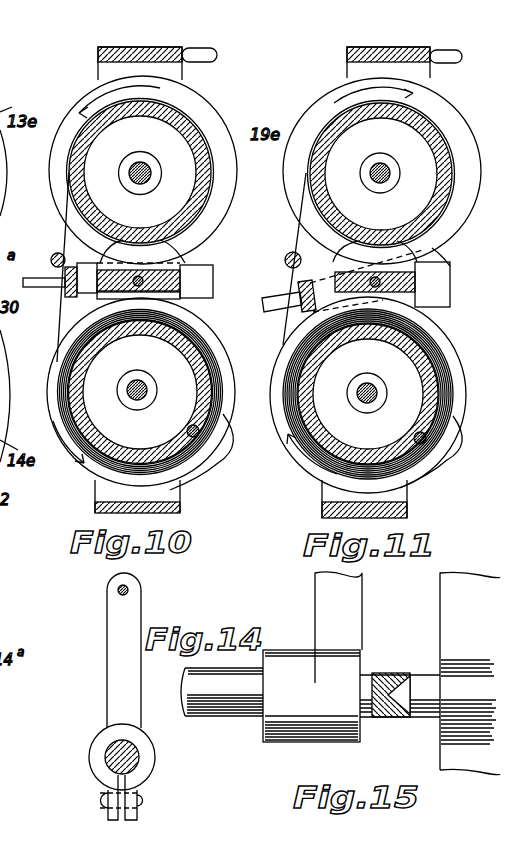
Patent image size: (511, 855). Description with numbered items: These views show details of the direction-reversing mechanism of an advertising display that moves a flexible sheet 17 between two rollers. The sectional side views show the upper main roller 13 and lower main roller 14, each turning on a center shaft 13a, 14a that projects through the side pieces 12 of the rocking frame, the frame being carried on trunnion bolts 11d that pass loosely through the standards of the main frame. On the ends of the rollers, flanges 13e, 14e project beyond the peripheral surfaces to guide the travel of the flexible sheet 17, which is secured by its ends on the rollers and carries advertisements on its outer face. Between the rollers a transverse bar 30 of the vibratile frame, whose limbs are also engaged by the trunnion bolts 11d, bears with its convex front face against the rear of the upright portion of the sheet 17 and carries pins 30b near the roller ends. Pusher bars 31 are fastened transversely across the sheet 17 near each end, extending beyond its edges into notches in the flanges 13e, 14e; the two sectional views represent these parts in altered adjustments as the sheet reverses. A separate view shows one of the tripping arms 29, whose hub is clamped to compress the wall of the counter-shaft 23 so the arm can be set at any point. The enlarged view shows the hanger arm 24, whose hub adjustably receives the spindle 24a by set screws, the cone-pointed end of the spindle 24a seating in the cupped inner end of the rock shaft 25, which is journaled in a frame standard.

In FIG. 10, the upper main roller 13 is at (140, 172).
In FIG. 11, the upper main roller 13 is at (381, 174).
In FIG. 10, the center shaft of upper roller 13a is at (141, 184).
In FIG. 11, the center shaft of upper roller 13a is at (390, 178).
In FIG. 10, the end flange of upper roller 13e is at (220, 125).
In FIG. 11, the end flange of upper roller 13e is at (329, 95).
In FIG. 10, the lower main roller 14 is at (140, 392).
In FIG. 11, the lower main roller 14 is at (368, 394).
In FIG. 10, the center shaft of lower roller 14a is at (164, 403).
In FIG. 11, the center shaft of lower roller 14a is at (397, 410).
In FIG. 10, the end flange of lower roller 14e is at (222, 340).
In FIG. 11, the end flange of lower roller 14e is at (290, 450).
In FIG. 10, the flexible sheet 17 is at (58, 315).
In FIG. 11, the flexible sheet 17 is at (298, 282).
In FIG. 10, the trunnion bolts 11d is at (175, 265).
In FIG. 11, the trunnion bolts 11d is at (420, 289).
In FIG. 10, the transverse bar 30 is at (213, 276).
In FIG. 11, the transverse bar 30 is at (467, 260).
In FIG. 10, the pins 30b is at (30, 283).
In FIG. 10, the pusher bars 31 is at (60, 258).
In FIG. 11, the pusher bars 31 is at (286, 256).
In FIG. 10, the side pieces of rocking frame 12 is at (178, 492).
In FIG. 11, the side pieces of rocking frame 12 is at (397, 498).
In FIG. 14, the tripping arms 29 is at (112, 708).
In FIG. 14, the counter-shaft 23 is at (140, 765).
In FIG. 15, the hanger arm 24 is at (440, 605).
In FIG. 15, the spindle 24a is at (428, 674).
In FIG. 15, the rock shaft 25 is at (231, 715).